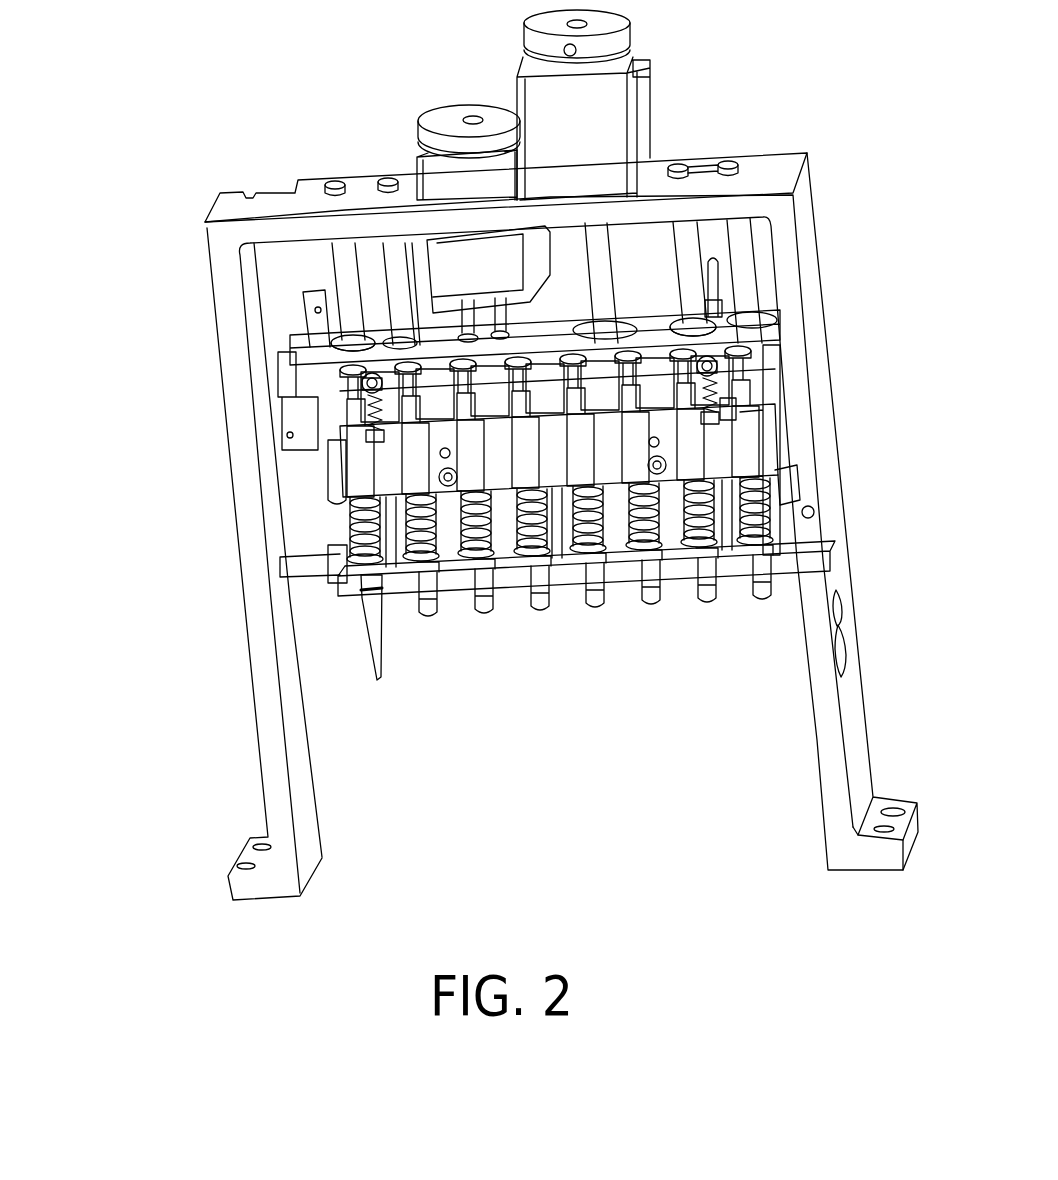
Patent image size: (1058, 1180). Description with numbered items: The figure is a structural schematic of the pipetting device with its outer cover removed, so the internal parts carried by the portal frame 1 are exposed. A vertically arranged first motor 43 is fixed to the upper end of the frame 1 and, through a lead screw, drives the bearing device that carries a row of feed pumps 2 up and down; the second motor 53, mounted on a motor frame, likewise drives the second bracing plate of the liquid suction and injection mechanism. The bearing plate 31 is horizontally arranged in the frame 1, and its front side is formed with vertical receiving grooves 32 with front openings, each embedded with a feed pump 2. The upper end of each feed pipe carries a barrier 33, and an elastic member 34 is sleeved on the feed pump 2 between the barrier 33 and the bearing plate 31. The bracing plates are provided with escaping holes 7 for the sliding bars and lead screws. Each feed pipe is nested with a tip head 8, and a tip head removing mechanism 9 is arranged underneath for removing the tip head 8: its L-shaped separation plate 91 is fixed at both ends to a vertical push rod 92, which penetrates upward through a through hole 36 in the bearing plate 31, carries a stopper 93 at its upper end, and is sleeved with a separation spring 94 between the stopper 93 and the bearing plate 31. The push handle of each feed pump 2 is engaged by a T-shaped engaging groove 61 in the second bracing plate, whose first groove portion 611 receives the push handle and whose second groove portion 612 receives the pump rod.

The portal frame 1 is at (830, 710).
The feed pump 2 is at (773, 460).
The escaping holes 7 is at (640, 330).
The tip head 8 is at (362, 627).
The tip head removing mechanism 9 is at (419, 509).
The bearing plate 31 is at (763, 510).
The receiving grooves 32 is at (747, 437).
The barrier 33 is at (790, 537).
The elastic member 34 is at (770, 538).
The through hole 36 is at (727, 410).
The first motor 43 is at (587, 130).
The second motor 53 is at (495, 187).
The engaging groove 61 is at (405, 374).
The first groove portion 611 is at (330, 377).
The second groove portion 612 is at (334, 384).
The separation plate 91 is at (385, 521).
The push rod 92 is at (343, 571).
The stopper 93 is at (368, 400).
The separation spring 94 is at (372, 412).